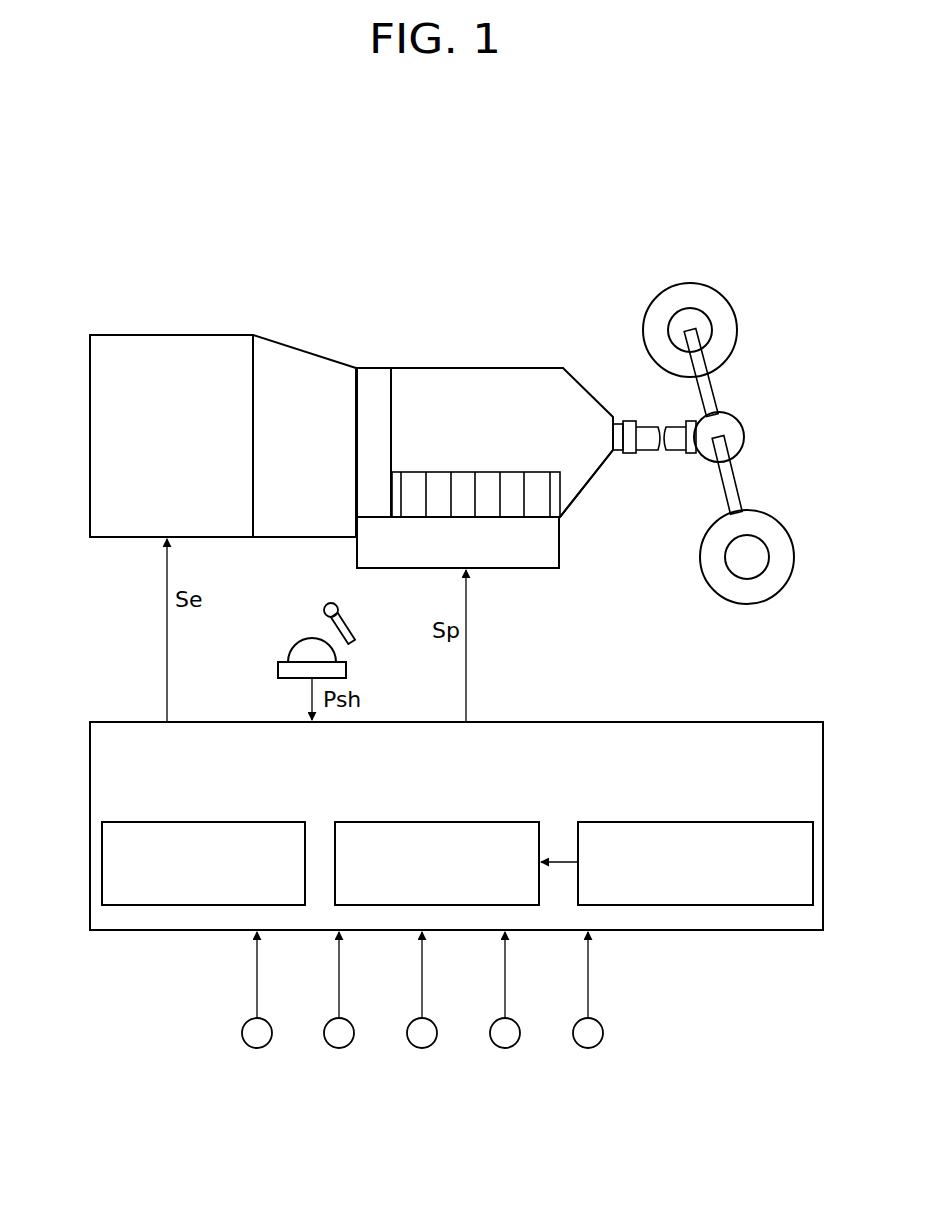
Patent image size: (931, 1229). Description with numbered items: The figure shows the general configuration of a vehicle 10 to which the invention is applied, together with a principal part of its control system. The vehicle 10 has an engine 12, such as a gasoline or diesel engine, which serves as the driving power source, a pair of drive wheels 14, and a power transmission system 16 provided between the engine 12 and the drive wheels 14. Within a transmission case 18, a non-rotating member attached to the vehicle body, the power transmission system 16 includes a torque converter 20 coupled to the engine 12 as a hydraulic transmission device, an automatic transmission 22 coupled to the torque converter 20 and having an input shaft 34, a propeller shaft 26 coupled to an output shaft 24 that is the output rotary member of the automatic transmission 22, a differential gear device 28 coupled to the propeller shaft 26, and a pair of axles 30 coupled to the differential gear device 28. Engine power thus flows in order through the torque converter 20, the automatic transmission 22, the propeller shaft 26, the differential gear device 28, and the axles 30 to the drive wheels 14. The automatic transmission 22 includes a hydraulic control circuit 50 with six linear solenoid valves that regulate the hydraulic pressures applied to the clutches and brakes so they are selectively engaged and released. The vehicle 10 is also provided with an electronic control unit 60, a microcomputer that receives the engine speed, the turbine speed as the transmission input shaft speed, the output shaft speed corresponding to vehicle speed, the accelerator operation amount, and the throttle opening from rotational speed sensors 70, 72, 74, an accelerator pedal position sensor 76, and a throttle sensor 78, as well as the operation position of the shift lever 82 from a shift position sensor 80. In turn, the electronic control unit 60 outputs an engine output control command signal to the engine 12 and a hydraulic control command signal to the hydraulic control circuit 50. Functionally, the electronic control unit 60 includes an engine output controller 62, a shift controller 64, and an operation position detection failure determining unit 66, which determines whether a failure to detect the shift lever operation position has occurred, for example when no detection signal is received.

The vehicle 10 is at (552, 208).
The engine 12 is at (193, 347).
The drive wheels 14 is at (690, 287).
The power transmission system 16 is at (415, 285).
The transmission case 18 is at (577, 500).
The torque converter 20 is at (287, 363).
The automatic transmission 22 is at (490, 372).
The output shaft 24 is at (617, 435).
The propeller shaft 26 is at (673, 451).
The differential gear device 28 is at (723, 432).
The axles 30 is at (707, 387).
The input shaft 34 is at (372, 375).
The hydraulic control circuit 50 is at (525, 560).
The electronic control unit 60 is at (732, 720).
The engine output controller 62 is at (270, 820).
The shift controller 64 is at (502, 820).
The operation position detection failure determining unit 66 is at (762, 820).
The rotational speed sensor 70 is at (258, 1048).
The rotational speed sensor 72 is at (340, 1048).
The rotational speed sensor 74 is at (423, 1048).
The accelerator pedal position sensor 76 is at (506, 1048).
The throttle sensor 78 is at (589, 1048).
The shift position sensor 80 is at (283, 667).
The shift lever 82 is at (326, 605).